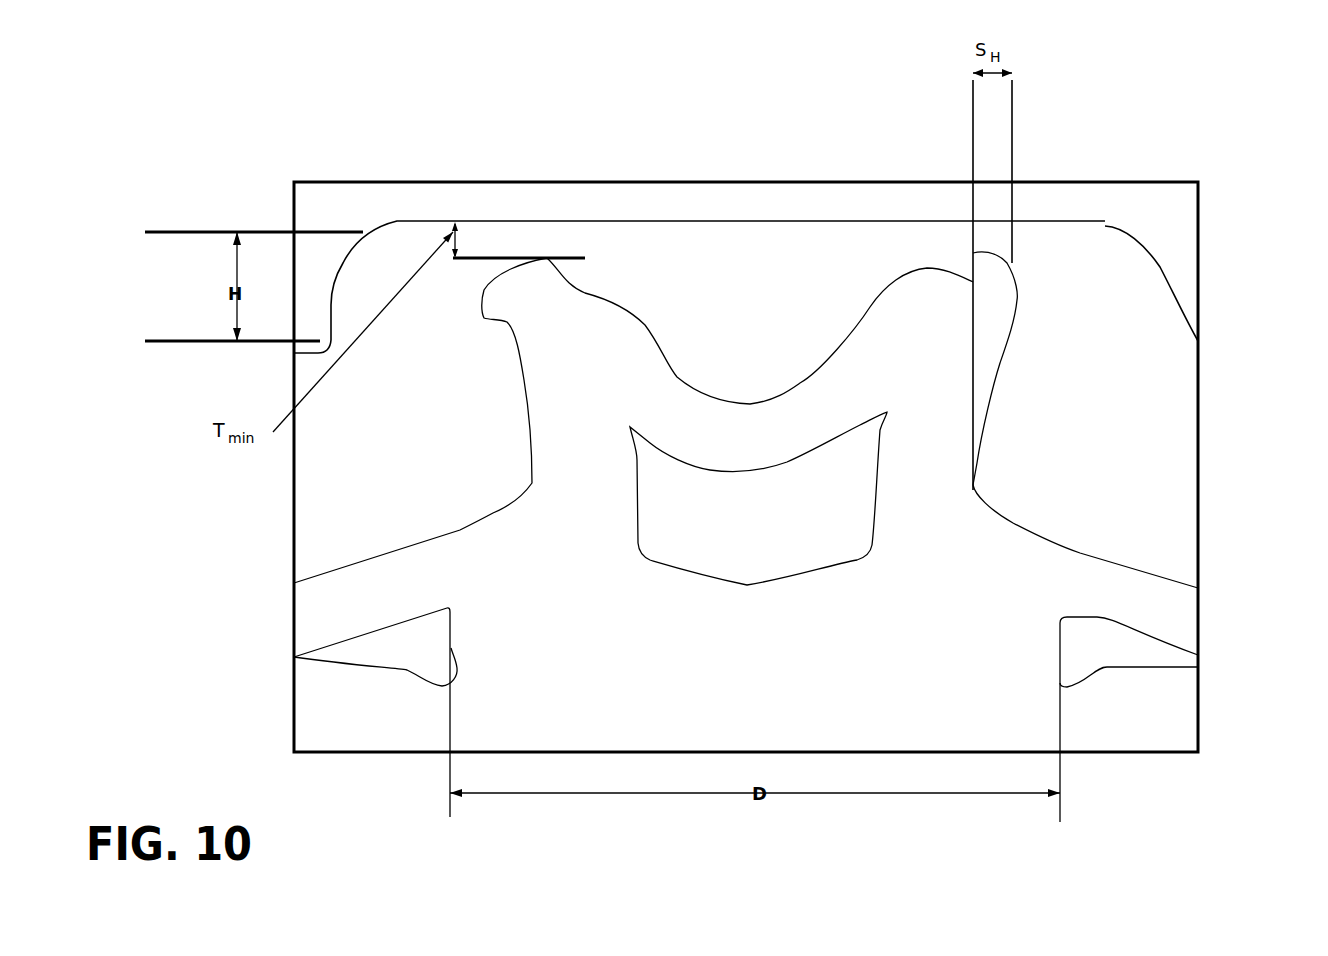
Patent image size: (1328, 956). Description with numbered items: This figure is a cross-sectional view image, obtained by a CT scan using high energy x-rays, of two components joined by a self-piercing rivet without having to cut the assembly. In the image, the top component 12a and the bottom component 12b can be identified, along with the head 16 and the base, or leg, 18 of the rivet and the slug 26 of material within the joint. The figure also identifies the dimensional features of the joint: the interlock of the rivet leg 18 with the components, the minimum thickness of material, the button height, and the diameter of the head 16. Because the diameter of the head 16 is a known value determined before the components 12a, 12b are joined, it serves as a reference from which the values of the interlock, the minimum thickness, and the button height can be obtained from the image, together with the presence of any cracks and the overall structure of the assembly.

The slug 26 is at (753, 400).
The bottom component 12b is at (1085, 268).
The base (leg) of the rivet 18 is at (1030, 328).
The top component 12a is at (1040, 557).
The head of the rivet 16 is at (948, 655).